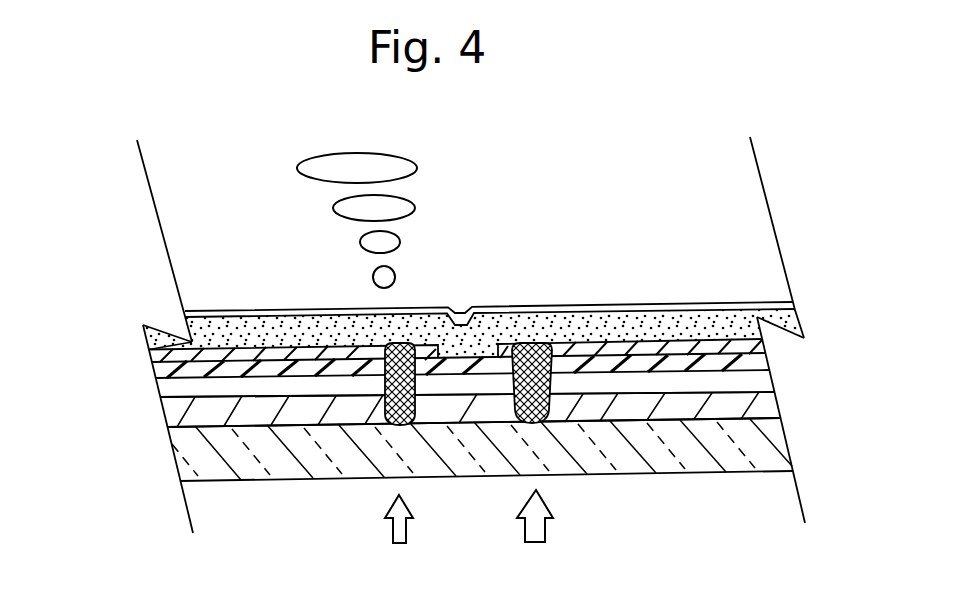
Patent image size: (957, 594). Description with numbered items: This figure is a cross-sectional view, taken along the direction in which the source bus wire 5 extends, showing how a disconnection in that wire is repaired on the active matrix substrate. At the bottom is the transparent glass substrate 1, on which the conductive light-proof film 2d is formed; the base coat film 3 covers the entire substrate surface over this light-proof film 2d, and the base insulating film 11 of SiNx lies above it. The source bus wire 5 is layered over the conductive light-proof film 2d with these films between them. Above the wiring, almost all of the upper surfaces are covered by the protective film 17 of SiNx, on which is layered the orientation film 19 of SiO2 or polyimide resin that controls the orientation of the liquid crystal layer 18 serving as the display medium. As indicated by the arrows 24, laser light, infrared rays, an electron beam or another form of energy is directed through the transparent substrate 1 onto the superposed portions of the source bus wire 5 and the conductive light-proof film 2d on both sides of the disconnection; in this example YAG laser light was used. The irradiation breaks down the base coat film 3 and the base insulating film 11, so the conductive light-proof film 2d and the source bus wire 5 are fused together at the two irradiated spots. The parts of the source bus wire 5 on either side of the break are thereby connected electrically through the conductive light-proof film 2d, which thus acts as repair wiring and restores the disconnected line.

The glass substrate 1 is at (773, 437).
The conductive light-proof film 2d is at (765, 400).
The base coat film 3 is at (165, 400).
The source bus wire 5 is at (153, 358).
The base insulating film 11 is at (158, 374).
The protective film 17 is at (189, 340).
The liquid crystal layer 18 is at (413, 165).
The orientation film 19 is at (767, 303).
The arrows 24 is at (392, 530).